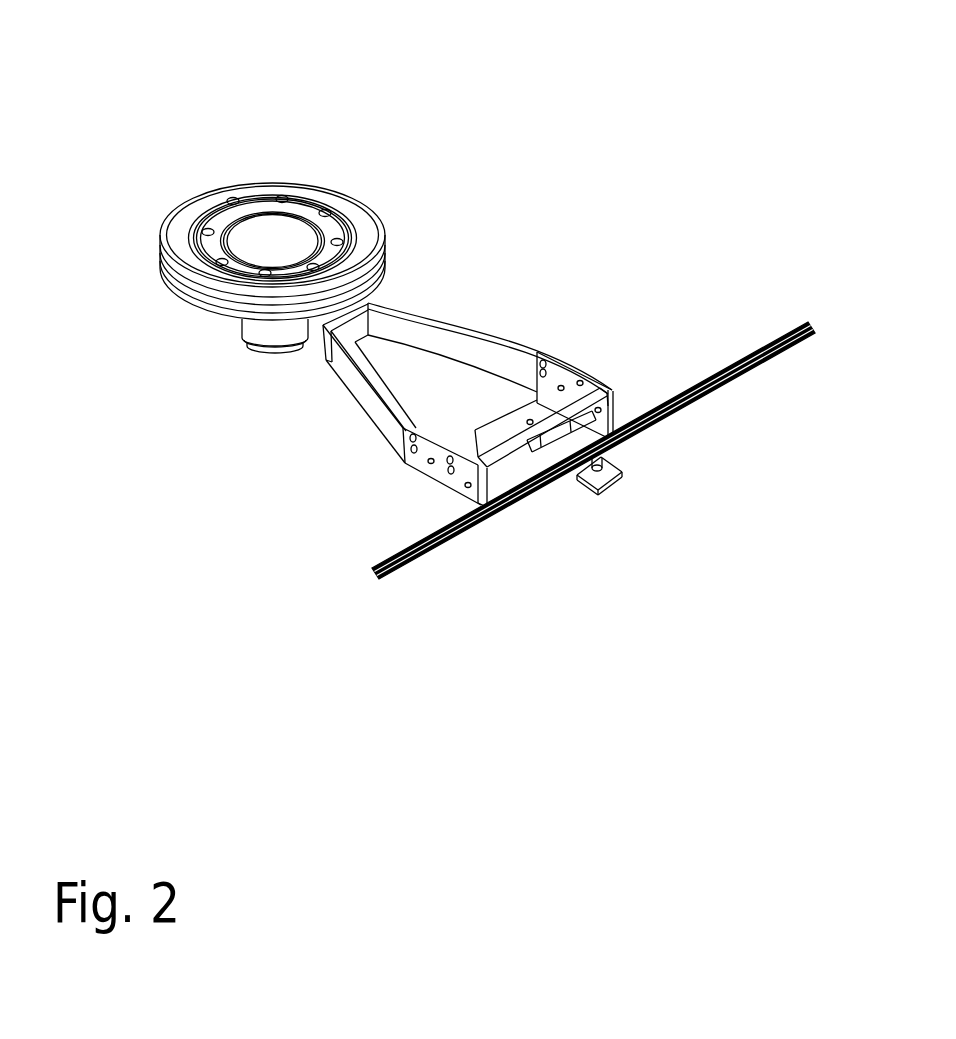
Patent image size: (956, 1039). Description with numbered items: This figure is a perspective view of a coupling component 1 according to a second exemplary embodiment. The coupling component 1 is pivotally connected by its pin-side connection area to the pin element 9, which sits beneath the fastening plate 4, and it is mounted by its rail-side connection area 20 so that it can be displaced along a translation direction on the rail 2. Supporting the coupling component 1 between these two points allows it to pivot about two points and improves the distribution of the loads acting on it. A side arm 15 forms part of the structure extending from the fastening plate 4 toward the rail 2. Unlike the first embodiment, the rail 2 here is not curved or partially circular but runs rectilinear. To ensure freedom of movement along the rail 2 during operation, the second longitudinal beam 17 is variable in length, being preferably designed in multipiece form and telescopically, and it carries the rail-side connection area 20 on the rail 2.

The coupling component 1 is at (560, 300).
The rail 2 is at (712, 394).
The fastening plate 4 is at (290, 228).
The pin element 9 is at (272, 350).
The side arm 15 is at (463, 347).
The second longitudinal beam 17 is at (621, 474).
The rail-side connection area 20 is at (564, 515).